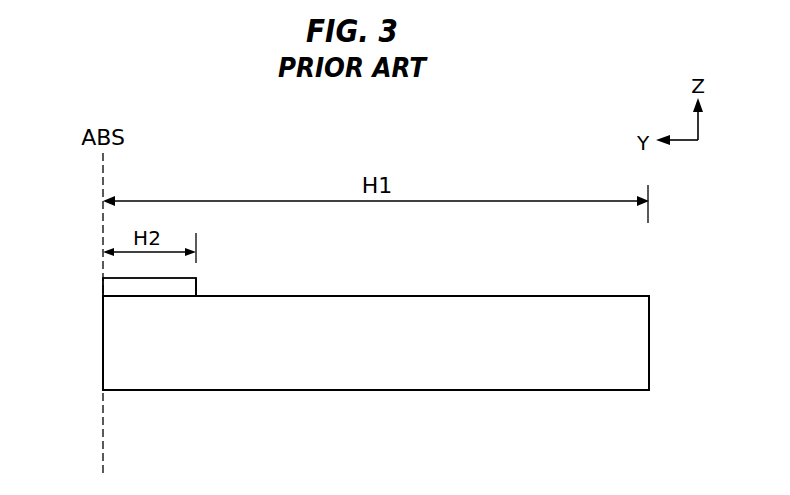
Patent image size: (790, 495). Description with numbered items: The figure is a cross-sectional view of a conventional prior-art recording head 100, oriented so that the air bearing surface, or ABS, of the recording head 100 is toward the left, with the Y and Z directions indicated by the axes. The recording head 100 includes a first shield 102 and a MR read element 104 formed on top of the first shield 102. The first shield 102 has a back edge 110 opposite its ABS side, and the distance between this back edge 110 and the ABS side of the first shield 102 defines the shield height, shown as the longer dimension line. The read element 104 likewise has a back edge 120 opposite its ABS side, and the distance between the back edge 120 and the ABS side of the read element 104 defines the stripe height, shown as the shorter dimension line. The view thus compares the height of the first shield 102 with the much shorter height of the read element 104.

The recording head 100 is at (516, 112).
The first shield 102 is at (318, 378).
The MR read element 104 is at (102, 289).
The back edge 110 is at (669, 328).
The back edge 120 is at (212, 285).